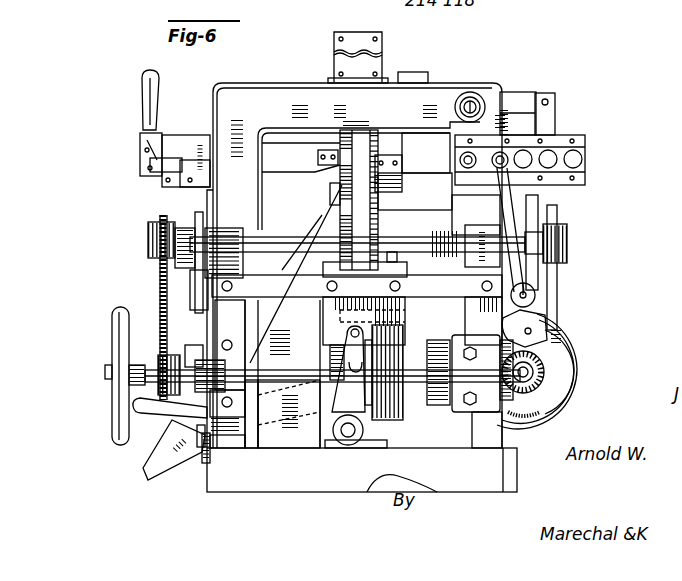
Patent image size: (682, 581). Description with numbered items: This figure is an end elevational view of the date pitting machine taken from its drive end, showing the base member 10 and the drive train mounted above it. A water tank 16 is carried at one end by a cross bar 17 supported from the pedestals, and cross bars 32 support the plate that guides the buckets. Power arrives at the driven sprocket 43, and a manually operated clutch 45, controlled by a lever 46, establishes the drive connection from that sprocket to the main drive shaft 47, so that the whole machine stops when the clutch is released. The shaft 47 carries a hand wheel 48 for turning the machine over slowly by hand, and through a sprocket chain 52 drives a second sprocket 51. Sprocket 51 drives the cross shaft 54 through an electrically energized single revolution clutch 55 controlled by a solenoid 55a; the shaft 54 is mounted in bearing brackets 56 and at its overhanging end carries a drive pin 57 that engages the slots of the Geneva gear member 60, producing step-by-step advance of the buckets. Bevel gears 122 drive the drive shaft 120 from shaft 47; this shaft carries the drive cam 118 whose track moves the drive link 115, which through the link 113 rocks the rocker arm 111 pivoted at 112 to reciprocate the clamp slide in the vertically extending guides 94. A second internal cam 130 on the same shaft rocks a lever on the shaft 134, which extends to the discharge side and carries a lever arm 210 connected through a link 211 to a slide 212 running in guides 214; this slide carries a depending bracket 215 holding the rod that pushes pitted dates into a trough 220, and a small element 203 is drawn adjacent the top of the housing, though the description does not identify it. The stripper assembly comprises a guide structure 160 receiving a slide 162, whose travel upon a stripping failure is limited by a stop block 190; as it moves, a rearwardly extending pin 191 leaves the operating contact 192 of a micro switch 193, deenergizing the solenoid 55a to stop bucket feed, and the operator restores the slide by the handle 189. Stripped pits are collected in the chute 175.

The base member 10 is at (319, 483).
The water tank 16 is at (397, 307).
The cross bar 17 is at (308, 288).
The cross bars 32 is at (440, 228).
The driven sprocket 43 is at (438, 372).
The manually operated clutch 45 is at (368, 425).
The lever 46 is at (140, 413).
The main drive shaft 47 is at (272, 405).
The hand wheel 48 is at (115, 335).
The second sprocket 51 is at (150, 225).
The sprocket chain 52 is at (157, 270).
The cross shaft 54 is at (275, 238).
The electrically energized single revolution clutch 55 is at (196, 212).
The solenoid 55a is at (172, 420).
The bearing brackets 56 is at (228, 232).
The drive pin 57 is at (562, 267).
The Geneva gear member 60 is at (560, 200).
The vertically extending guides 94 is at (356, 33).
The rocker arm 111 is at (514, 100).
The pivot 112 is at (470, 100).
The link 113 is at (548, 112).
The drive link 115 is at (540, 322).
The drive cam 118 is at (572, 358).
The drive shaft 120 is at (548, 373).
The bevel gears 122 is at (562, 396).
The second internal cam 130 is at (580, 386).
The shaft 134 is at (535, 300).
The guide structure 160 is at (197, 140).
The slide 162 is at (285, 145).
The chute 175 is at (287, 447).
The handle 189 is at (147, 88).
The stop block 190 is at (320, 148).
The rearwardly extending pin 191 is at (150, 135).
The operating contact 192 is at (145, 153).
The micro switch 193 is at (150, 165).
The block 203 is at (410, 77).
The lever arm 210 is at (562, 196).
The link 211 is at (500, 135).
The slide 212 is at (430, 163).
The guides 214 is at (566, 135).
The depending bracket 215 is at (402, 184).
The trough 220 is at (167, 475).